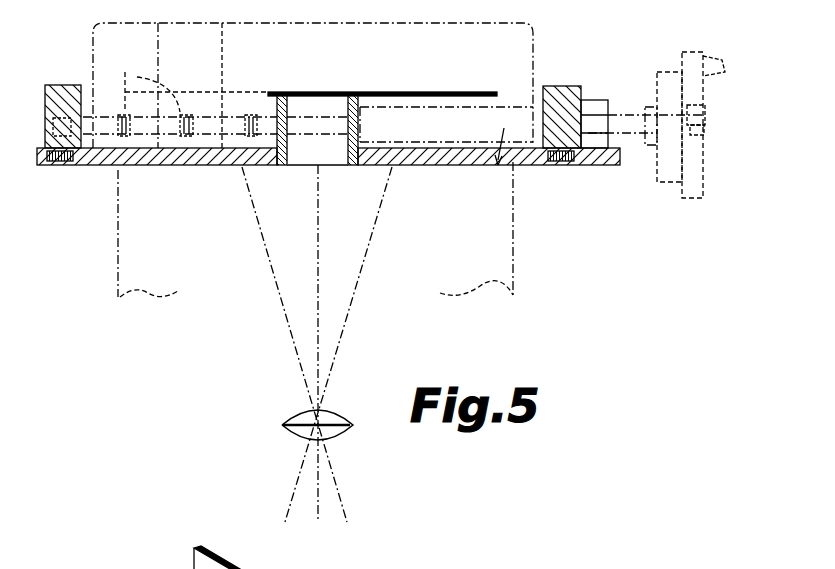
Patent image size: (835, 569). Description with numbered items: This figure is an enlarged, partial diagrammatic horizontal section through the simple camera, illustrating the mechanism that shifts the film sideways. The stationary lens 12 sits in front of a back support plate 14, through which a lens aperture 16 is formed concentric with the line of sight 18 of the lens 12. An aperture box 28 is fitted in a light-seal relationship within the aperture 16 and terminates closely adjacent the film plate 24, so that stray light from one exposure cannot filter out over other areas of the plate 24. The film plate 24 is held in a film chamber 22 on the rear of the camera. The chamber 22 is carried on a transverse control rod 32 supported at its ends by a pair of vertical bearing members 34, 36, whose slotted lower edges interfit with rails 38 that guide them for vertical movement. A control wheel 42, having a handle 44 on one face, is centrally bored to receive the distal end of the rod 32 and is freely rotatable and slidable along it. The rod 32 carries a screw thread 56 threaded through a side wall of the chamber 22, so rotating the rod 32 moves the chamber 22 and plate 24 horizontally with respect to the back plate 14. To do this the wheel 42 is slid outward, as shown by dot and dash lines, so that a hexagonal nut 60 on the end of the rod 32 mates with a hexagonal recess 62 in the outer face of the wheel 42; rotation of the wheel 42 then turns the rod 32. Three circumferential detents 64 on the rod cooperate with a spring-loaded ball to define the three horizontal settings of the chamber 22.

The lens 12 is at (306, 415).
The back support plate 14 is at (207, 166).
The lens aperture 16 is at (334, 167).
The line of sight 18 is at (318, 240).
The film pack or chamber 22 is at (263, 57).
The film plate 24 is at (385, 92).
The aperture box 28 is at (287, 107).
The control rod 32 is at (145, 137).
The vertical bearing member 34 is at (62, 95).
The vertical bearing member 36 is at (572, 86).
The rail 38 is at (72, 167).
The control wheel 42 is at (670, 72).
The handle 44 is at (713, 60).
The screw thread 56 is at (489, 158).
The hexagonal nut or lug 60 is at (706, 112).
The hexagonal recess 62 is at (703, 133).
The circumferential detent 64 is at (187, 83).